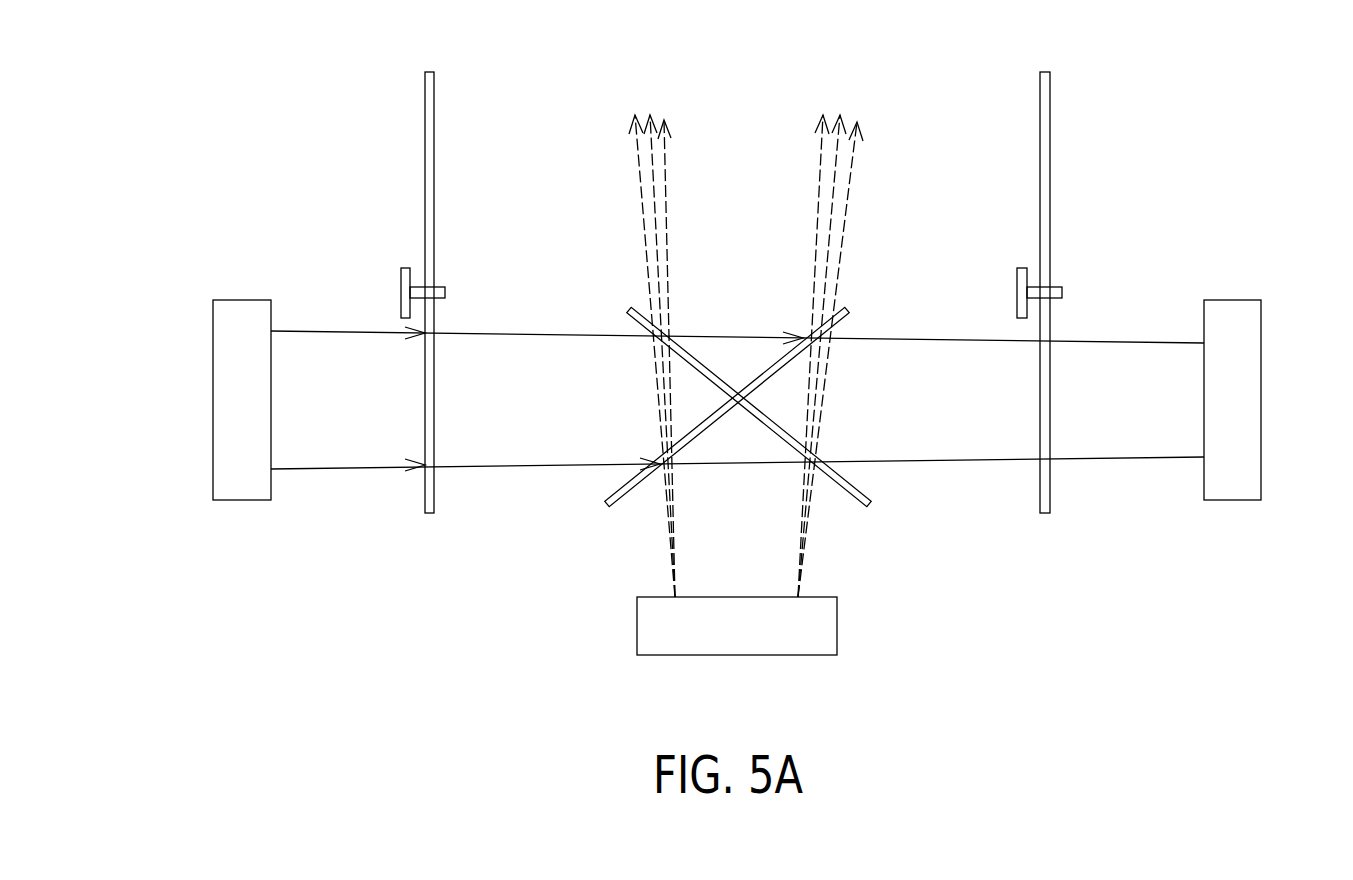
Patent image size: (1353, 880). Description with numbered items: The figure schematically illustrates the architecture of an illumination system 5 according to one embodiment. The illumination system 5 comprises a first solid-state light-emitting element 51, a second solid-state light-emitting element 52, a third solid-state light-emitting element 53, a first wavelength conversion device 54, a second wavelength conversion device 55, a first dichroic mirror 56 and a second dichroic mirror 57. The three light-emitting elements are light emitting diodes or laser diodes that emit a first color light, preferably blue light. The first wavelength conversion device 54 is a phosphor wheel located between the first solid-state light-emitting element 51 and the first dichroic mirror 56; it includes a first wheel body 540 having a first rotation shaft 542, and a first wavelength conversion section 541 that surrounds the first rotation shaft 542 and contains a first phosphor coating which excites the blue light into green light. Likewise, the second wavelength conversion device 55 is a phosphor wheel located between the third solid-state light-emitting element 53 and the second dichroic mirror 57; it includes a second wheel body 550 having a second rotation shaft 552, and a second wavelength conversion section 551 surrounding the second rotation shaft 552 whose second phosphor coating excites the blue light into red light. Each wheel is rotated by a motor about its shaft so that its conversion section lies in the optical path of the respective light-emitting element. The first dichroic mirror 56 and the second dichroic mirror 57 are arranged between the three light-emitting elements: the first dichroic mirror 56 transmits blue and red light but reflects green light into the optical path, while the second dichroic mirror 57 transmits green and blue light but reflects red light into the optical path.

The illumination system 5 is at (195, 142).
The first solid-state light-emitting element 51 is at (243, 300).
The second solid-state light-emitting element 52 is at (838, 623).
The third solid-state light-emitting element 53 is at (1237, 300).
The first wavelength conversion device 54 is at (429, 256).
The first wheel body 540 is at (434, 150).
The first wavelength conversion section 541 is at (428, 363).
The first rotation shaft 542 is at (417, 282).
The second wavelength conversion device 55 is at (1044, 256).
The second wheel body 550 is at (1050, 150).
The second wavelength conversion section 551 is at (1044, 363).
The second rotation shaft 552 is at (1032, 282).
The first dichroic mirror 56 is at (847, 310).
The second dichroic mirror 57 is at (628, 310).